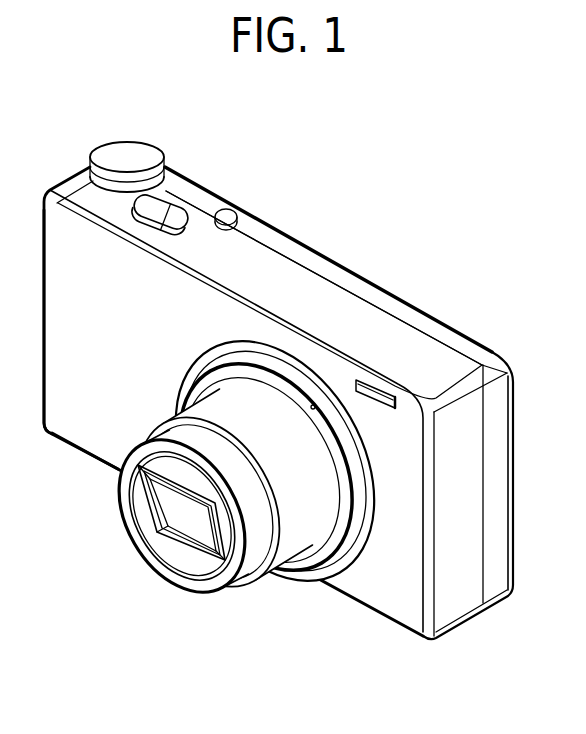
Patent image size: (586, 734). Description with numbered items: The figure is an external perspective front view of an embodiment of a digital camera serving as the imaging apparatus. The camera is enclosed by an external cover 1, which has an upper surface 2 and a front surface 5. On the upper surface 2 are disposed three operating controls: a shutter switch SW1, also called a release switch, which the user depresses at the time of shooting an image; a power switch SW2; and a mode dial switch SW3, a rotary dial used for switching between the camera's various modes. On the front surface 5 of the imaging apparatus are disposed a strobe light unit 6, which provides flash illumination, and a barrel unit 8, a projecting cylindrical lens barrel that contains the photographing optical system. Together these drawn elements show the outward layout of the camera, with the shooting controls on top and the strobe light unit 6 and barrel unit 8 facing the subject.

The external cover 1 is at (470, 489).
The upper surface 2 is at (298, 285).
The front surface 5 is at (82, 437).
The strobe light unit 6 is at (378, 388).
The barrel unit 8 is at (273, 610).
The shutter switch SW1 is at (162, 212).
The power switch SW2 is at (228, 213).
The mode dial switch SW3 is at (128, 157).